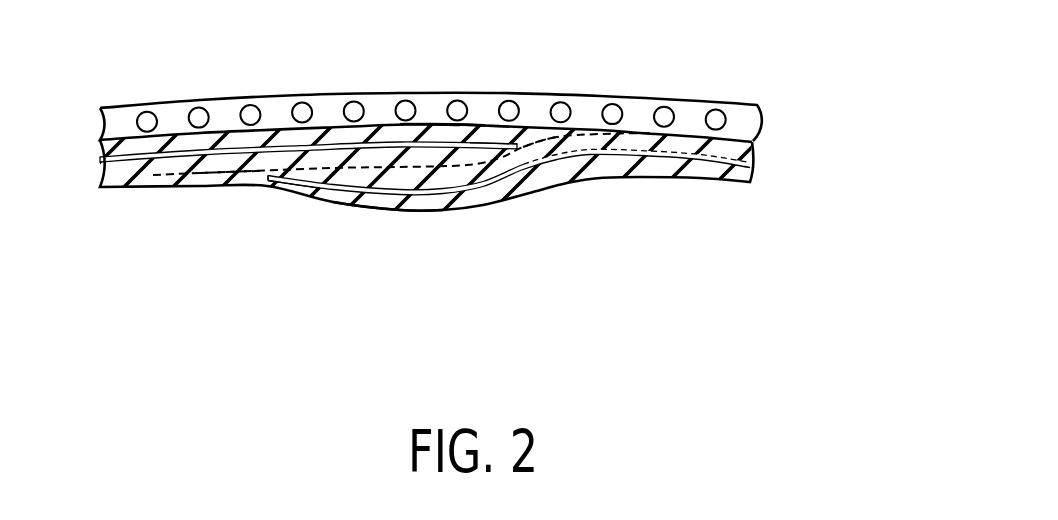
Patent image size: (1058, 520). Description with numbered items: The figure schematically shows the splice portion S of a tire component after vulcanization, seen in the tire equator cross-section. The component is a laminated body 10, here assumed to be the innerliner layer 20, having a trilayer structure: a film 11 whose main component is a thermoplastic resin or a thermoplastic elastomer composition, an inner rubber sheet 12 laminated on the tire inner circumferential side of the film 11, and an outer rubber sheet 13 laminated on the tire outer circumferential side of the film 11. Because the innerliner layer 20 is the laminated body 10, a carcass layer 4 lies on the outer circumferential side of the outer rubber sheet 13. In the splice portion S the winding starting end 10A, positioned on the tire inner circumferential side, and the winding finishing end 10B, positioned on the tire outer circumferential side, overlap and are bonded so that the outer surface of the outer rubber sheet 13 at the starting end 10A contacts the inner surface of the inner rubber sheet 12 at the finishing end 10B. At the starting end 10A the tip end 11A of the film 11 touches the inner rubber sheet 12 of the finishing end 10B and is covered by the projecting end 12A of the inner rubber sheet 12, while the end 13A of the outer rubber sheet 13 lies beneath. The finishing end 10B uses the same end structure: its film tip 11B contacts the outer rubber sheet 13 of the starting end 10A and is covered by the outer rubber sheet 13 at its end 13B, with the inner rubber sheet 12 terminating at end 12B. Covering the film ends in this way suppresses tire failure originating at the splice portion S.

The carcass layer 4 is at (747, 126).
The laminated body 10 is at (843, 276).
The innerliner layer 20 is at (756, 141).
The inner rubber sheet 12 is at (690, 158).
The film 11 is at (720, 163).
The outer rubber sheet 13 is at (743, 173).
The winding finishing end 10B is at (428, 119).
The end of the inner rubber sheet at the winding finishing end 12B is at (457, 156).
The tip end of the film 11B is at (495, 145).
The end of the outer rubber sheet at the winding finishing end 13B is at (540, 134).
The winding starting end 10A is at (359, 221).
The end of the inner rubber sheet 12A is at (232, 180).
The end of the film 11A is at (288, 184).
The end of the outer rubber sheet at the winding starting end 13A is at (273, 178).
The splice portion S is at (416, 236).